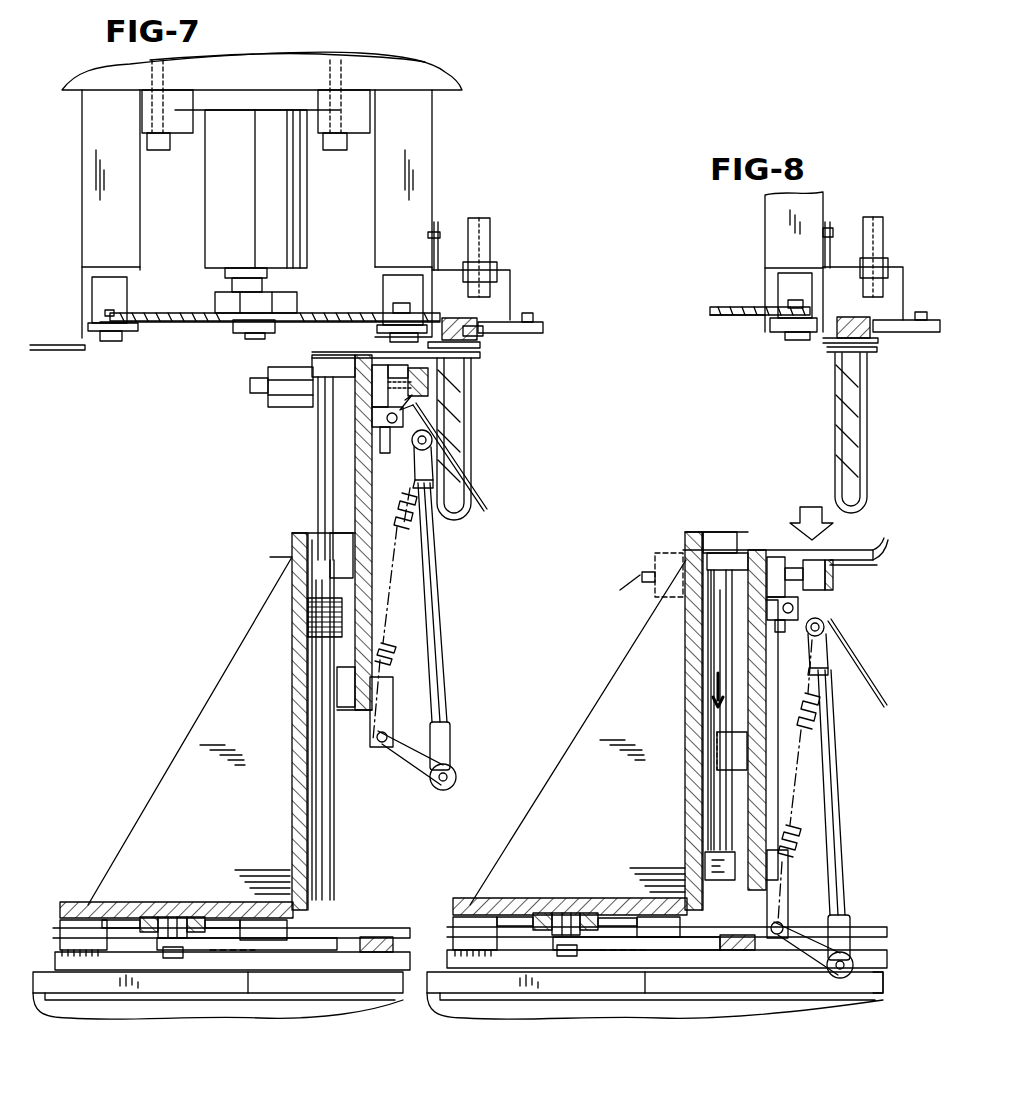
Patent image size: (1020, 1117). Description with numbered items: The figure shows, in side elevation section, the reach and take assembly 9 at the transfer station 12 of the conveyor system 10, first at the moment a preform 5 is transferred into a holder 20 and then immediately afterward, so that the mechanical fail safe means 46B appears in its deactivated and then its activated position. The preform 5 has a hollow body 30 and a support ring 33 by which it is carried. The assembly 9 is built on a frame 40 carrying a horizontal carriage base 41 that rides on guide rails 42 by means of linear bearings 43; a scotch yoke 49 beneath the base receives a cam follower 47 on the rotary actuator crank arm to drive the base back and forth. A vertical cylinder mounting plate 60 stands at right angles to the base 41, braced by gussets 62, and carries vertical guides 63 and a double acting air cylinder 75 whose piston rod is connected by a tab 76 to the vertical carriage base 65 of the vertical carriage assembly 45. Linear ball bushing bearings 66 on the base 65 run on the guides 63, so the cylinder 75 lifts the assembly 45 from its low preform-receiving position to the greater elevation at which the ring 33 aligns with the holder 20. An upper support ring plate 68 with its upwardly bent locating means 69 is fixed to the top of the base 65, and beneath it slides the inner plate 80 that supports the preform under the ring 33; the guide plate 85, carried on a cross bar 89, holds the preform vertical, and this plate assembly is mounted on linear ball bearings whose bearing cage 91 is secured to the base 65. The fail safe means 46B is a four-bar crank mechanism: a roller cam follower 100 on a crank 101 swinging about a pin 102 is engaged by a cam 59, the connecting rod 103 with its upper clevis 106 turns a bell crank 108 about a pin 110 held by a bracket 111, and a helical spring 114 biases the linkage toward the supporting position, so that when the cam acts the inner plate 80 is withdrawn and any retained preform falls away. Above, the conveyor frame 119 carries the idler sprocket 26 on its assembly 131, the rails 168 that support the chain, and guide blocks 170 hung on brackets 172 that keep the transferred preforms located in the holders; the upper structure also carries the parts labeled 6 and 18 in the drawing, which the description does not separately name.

In FIG. 7, the preform 5 is at (488, 395).
In FIG. 8, the preform 5 is at (870, 420).
In FIG. 7, the cover 6 is at (448, 67).
In FIG. 7, the reach and take assembly 9 is at (152, 718).
In FIG. 7, the conveyor system 10 is at (195, 336).
In FIG. 8, the conveyor system 10 is at (703, 312).
In FIG. 7, the transfer station 12 is at (445, 160).
In FIG. 7, the plate 18 is at (162, 326).
In FIG. 8, the plate 18 is at (738, 305).
In FIG. 7, the holder 20 is at (55, 353).
In FIG. 8, the holder 20 is at (825, 348).
In FIG. 7, the idler sprocket 26 is at (172, 313).
In FIG. 8, the idler sprocket 26 is at (728, 318).
In FIG. 7, the hollow body 30 is at (470, 440).
In FIG. 8, the hollow body 30 is at (840, 440).
In FIG. 7, the support ring 33 is at (478, 355).
In FIG. 8, the support ring 33 is at (835, 362).
In FIG. 7, the frame 40 is at (186, 1010).
In FIG. 8, the frame 40 is at (545, 1008).
In FIG. 7, the horizontal carriage base 41 is at (115, 905).
In FIG. 8, the horizontal carriage base 41 is at (515, 903).
In FIG. 7, the guide rails 42 is at (135, 920).
In FIG. 8, the guide rails 42 is at (530, 918).
In FIG. 7, the linear bearings 43 is at (78, 920).
In FIG. 8, the linear bearings 43 is at (468, 918).
In FIG. 7, the vertical carriage assembly 45 is at (350, 425).
In FIG. 8, the vertical carriage assembly 45 is at (685, 532).
In FIG. 7, the mechanical fail safe means 46B is at (440, 572).
In FIG. 8, the mechanical fail safe means 46B is at (838, 790).
In FIG. 7, the cam follower 47 is at (172, 920).
In FIG. 8, the cam follower 47 is at (567, 915).
In FIG. 7, the scotch yoke 49 is at (350, 938).
In FIG. 8, the scotch yoke 49 is at (712, 962).
In FIG. 8, the cam 59 is at (880, 985).
In FIG. 7, the vertical cylinder mounting plate 60 is at (293, 768).
In FIG. 8, the vertical cylinder mounting plate 60 is at (687, 660).
In FIG. 7, the gussets 62 is at (153, 778).
In FIG. 8, the gussets 62 is at (578, 732).
In FIG. 7, the vertical guides 63 is at (330, 535).
In FIG. 8, the vertical guides 63 is at (725, 545).
In FIG. 7, the vertical carriage base 65 is at (360, 478).
In FIG. 8, the vertical carriage base 65 is at (755, 552).
In FIG. 7, the linear ball bushing bearings 66 is at (335, 562).
In FIG. 8, the linear ball bushing bearings 66 is at (735, 752).
In FIG. 7, the upper support ring plate 68 is at (385, 355).
In FIG. 8, the upper support ring plate 68 is at (835, 548).
In FIG. 8, the locating means 69 is at (882, 540).
In FIG. 7, the air cylinder assembly 75 is at (315, 702).
In FIG. 8, the air cylinder assembly 75 is at (712, 718).
In FIG. 7, the tab 76 is at (328, 362).
In FIG. 8, the tab 76 is at (720, 540).
In FIG. 8, the inner plate 80 is at (875, 558).
In FIG. 7, the guide plate 85 is at (488, 502).
In FIG. 8, the guide plate 85 is at (880, 702).
In FIG. 8, the cross bar 89 is at (835, 580).
In FIG. 7, the bearing cage 91 is at (280, 372).
In FIG. 8, the bearing cage 91 is at (651, 575).
In FIG. 7, the roller type cam follower 100 is at (457, 782).
In FIG. 8, the roller type cam follower 100 is at (845, 980).
In FIG. 7, the crank 101 is at (410, 765).
In FIG. 8, the crank 101 is at (797, 960).
In FIG. 7, the pin or axle 102 is at (375, 748).
In FIG. 8, the pin or axle 102 is at (783, 920).
In FIG. 7, the connecting rod 103 is at (438, 630).
In FIG. 8, the connecting rod 103 is at (840, 830).
In FIG. 7, the upper clevis 106 is at (440, 450).
In FIG. 8, the upper clevis 106 is at (830, 644).
In FIG. 7, the bell crank 108 is at (405, 415).
In FIG. 8, the bell crank 108 is at (805, 620).
In FIG. 7, the pin 110 is at (392, 425).
In FIG. 8, the pin 110 is at (800, 607).
In FIG. 7, the bracket 111 is at (375, 440).
In FIG. 8, the bracket 111 is at (770, 618).
In FIG. 7, the helical spring 114 is at (405, 592).
In FIG. 8, the helical spring 114 is at (805, 755).
In FIG. 7, the frame 119 is at (412, 100).
In FIG. 8, the frame 119 is at (772, 210).
In FIG. 7, the assembly 131 is at (245, 228).
In FIG. 7, the rails 168 is at (118, 267).
In FIG. 8, the rails 168 is at (803, 270).
In FIG. 7, the guide blocks 170 is at (545, 330).
In FIG. 8, the guide blocks 170 is at (920, 335).
In FIG. 7, the brackets 172 is at (510, 282).
In FIG. 8, the brackets 172 is at (905, 280).